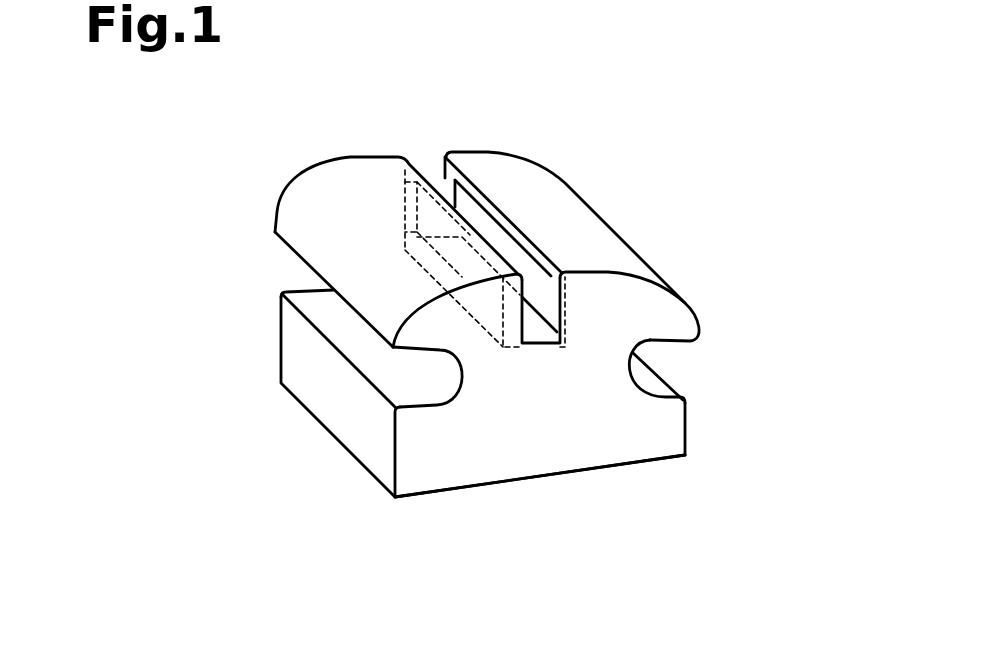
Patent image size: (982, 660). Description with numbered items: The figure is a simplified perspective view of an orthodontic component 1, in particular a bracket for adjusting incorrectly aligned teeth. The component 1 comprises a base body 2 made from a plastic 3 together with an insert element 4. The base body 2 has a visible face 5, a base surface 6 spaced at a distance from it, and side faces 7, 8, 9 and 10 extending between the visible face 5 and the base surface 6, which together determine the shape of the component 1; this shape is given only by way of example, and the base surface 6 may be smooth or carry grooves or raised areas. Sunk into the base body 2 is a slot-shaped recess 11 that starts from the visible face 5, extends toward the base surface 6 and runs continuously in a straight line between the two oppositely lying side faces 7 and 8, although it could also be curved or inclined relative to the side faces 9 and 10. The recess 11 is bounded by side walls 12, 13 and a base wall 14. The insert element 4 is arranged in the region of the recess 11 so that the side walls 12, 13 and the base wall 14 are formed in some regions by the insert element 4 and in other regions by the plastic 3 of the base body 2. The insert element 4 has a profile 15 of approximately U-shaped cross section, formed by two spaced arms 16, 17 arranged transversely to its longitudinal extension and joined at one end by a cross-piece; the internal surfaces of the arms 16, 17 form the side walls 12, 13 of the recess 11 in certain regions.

The orthodontic component 1 is at (499, 311).
The base body 2 is at (377, 275).
The plastic 3 is at (620, 315).
The insert element 4 is at (541, 277).
The visible face 5 is at (346, 180).
The base surface 6 is at (511, 485).
The side face 7 is at (667, 436).
The side face 8 is at (319, 195).
The side face 9 is at (698, 407).
The side face 10 is at (343, 395).
The slot-shaped recess 11 is at (495, 237).
The side wall 12 is at (447, 162).
The side wall 13 is at (407, 168).
The base wall 14 is at (575, 350).
The profile 15 is at (497, 236).
The arm 16 is at (518, 263).
The arm 17 is at (465, 250).